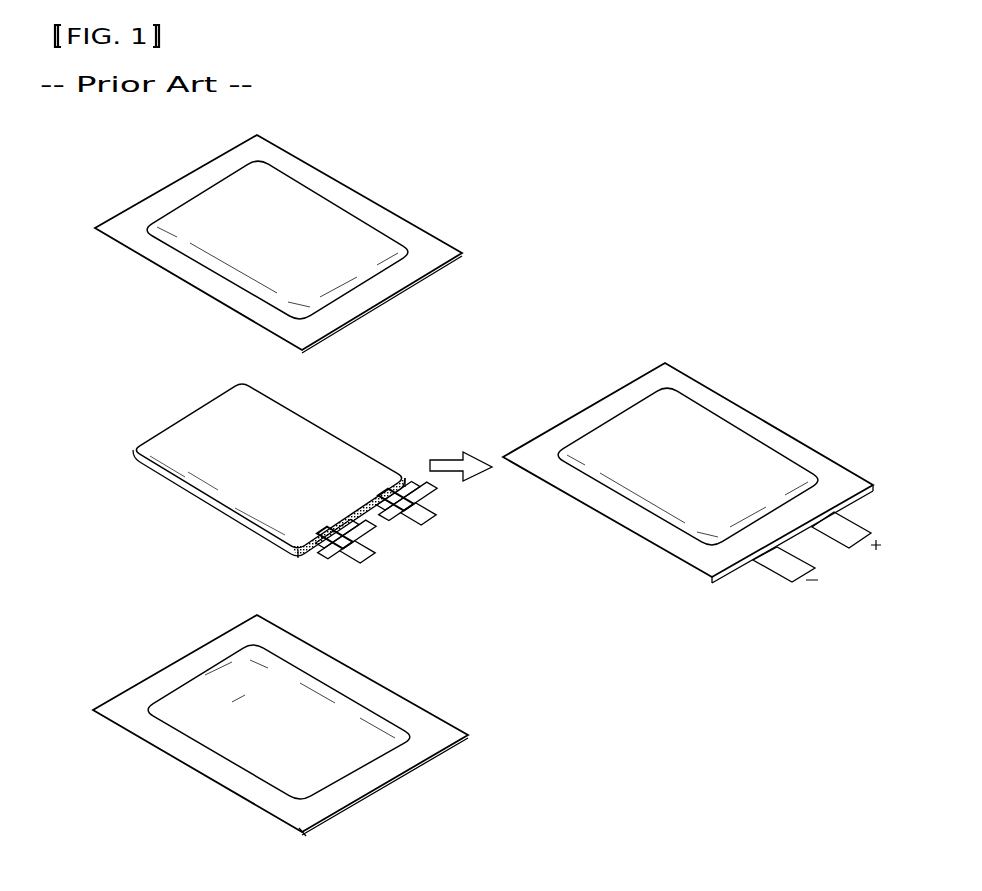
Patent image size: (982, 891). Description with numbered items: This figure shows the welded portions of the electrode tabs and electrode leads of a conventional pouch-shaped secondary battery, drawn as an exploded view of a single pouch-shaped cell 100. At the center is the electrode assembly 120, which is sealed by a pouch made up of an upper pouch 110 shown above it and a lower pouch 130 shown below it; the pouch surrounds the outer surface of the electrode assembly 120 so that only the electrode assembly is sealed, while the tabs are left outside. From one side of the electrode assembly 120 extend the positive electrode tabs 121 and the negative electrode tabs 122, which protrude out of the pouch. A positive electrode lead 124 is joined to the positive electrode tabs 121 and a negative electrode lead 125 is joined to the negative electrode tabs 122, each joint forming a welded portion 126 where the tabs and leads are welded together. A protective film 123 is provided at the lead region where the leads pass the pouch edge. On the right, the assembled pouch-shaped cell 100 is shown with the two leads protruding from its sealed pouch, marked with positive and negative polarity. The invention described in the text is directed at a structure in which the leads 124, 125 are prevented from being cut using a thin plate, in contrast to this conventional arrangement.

The pouch-shaped cell 100 is at (758, 402).
The upper pouch 110 is at (452, 250).
The electrode assembly 120 is at (391, 446).
The positive electrode tabs 121 is at (389, 495).
The negative electrode tabs 122 is at (318, 532).
The protective film 123 is at (419, 516).
The positive electrode lead 124 is at (427, 531).
The negative electrode lead 125 is at (363, 562).
The welded portion 126 is at (397, 512).
The lower pouch 130 is at (421, 713).